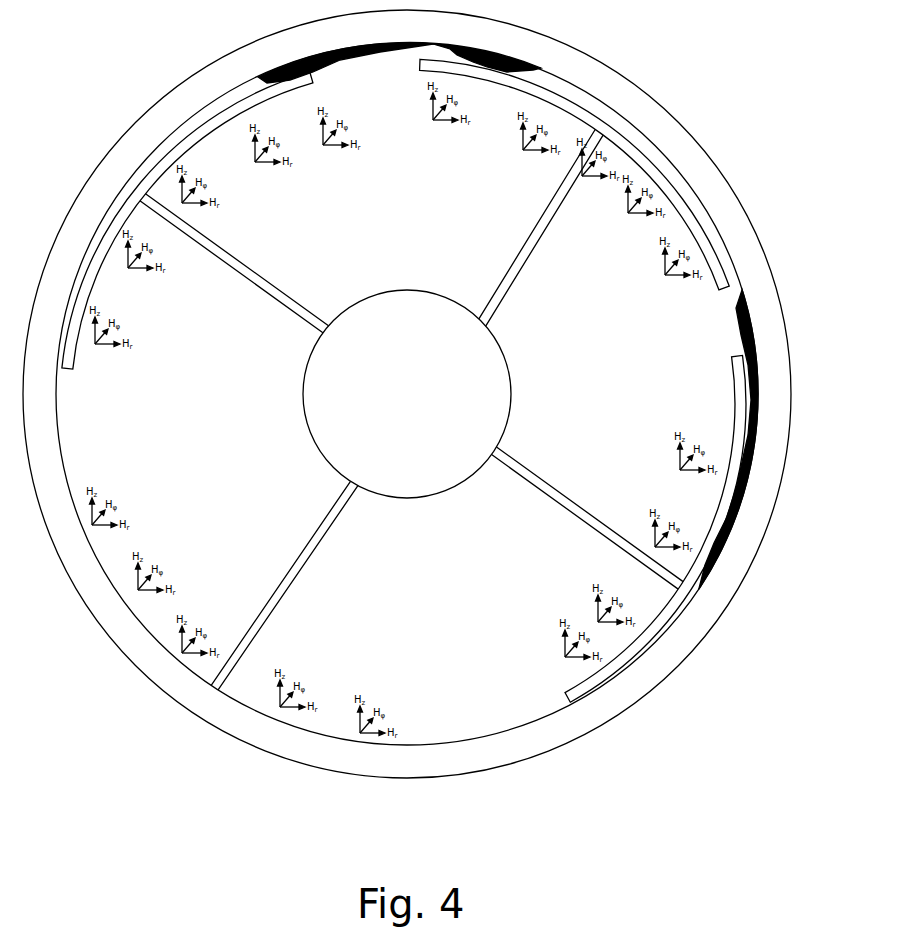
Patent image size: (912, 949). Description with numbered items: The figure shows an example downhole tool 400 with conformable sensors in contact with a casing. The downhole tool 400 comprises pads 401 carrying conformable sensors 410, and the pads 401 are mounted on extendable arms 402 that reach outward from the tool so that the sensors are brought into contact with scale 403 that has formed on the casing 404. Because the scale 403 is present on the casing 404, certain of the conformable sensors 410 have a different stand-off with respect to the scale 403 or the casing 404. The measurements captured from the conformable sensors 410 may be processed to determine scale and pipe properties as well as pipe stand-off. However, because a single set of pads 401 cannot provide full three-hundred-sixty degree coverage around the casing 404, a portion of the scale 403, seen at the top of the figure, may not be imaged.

The downhole tool 400 is at (307, 362).
The pads 401 is at (180, 148).
The extendable arms 402 is at (326, 312).
The scale 403 is at (747, 312).
The casing 404 is at (651, 97).
The conformable sensors 410 is at (107, 237).